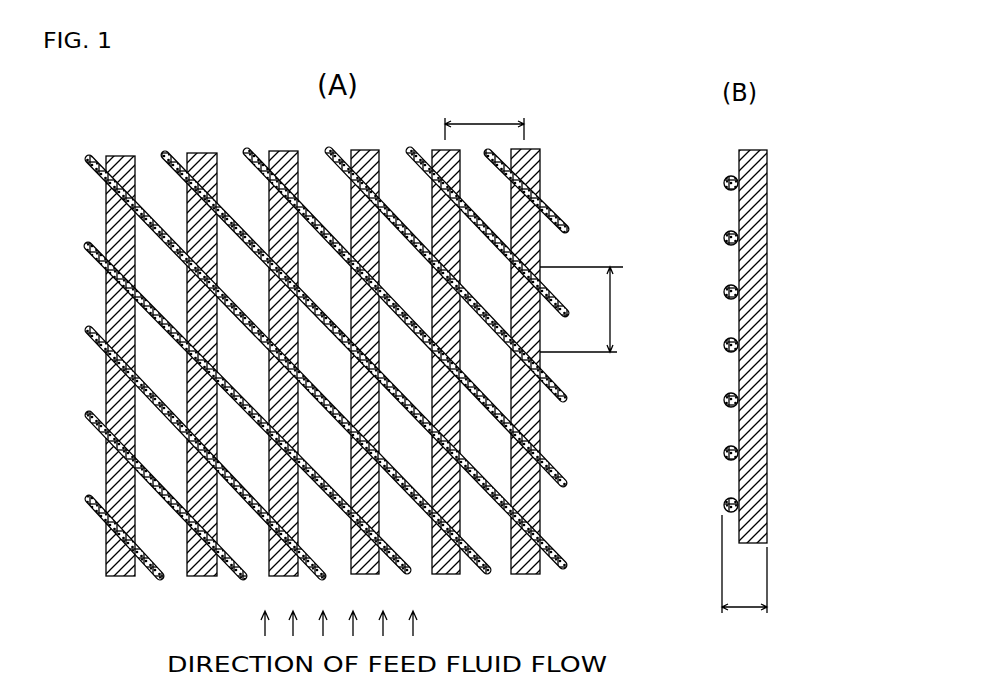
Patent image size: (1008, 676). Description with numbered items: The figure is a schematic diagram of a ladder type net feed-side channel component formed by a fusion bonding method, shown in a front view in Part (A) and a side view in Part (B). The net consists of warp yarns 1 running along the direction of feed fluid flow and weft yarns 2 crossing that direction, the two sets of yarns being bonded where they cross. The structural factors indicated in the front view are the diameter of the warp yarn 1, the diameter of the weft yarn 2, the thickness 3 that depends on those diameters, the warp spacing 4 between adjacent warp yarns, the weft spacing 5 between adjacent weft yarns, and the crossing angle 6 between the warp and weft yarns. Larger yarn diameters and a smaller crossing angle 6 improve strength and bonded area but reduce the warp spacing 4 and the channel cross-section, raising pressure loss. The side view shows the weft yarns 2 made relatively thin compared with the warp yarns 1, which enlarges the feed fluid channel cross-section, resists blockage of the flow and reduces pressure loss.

The warp yarn 1 is at (543, 165).
The weft yarn 2 is at (563, 214).
The thickness 3 is at (744, 564).
The warp spacing 4 is at (484, 116).
The weft spacing 5 is at (586, 309).
The crossing angle 6 is at (465, 410).